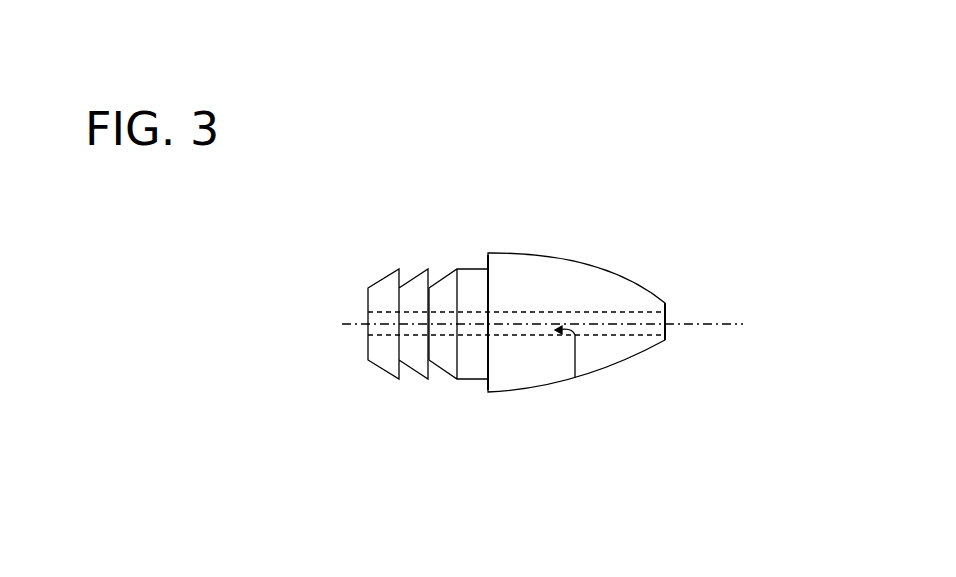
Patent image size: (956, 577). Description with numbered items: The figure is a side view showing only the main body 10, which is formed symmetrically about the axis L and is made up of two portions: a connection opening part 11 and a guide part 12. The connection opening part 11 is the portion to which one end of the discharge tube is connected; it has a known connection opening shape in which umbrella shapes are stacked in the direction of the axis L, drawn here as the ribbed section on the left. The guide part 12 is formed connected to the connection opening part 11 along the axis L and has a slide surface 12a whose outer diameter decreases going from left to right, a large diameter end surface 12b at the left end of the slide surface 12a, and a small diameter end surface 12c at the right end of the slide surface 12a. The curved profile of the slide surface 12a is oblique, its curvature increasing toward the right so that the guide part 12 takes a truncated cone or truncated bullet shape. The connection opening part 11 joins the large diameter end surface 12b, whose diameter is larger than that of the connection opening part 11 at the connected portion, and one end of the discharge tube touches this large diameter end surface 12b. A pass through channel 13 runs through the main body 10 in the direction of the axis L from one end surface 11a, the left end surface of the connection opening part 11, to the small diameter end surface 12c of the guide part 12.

The main body 10 is at (592, 252).
The connection opening part 11 is at (445, 363).
The one end surface 11a is at (368, 342).
The guide part 12 is at (618, 352).
The slide surface 12a is at (547, 258).
The large diameter end surface 12b is at (487, 383).
The small diameter end surface 12c is at (668, 328).
The pass through channel 13 is at (575, 378).
The axis L is at (712, 322).